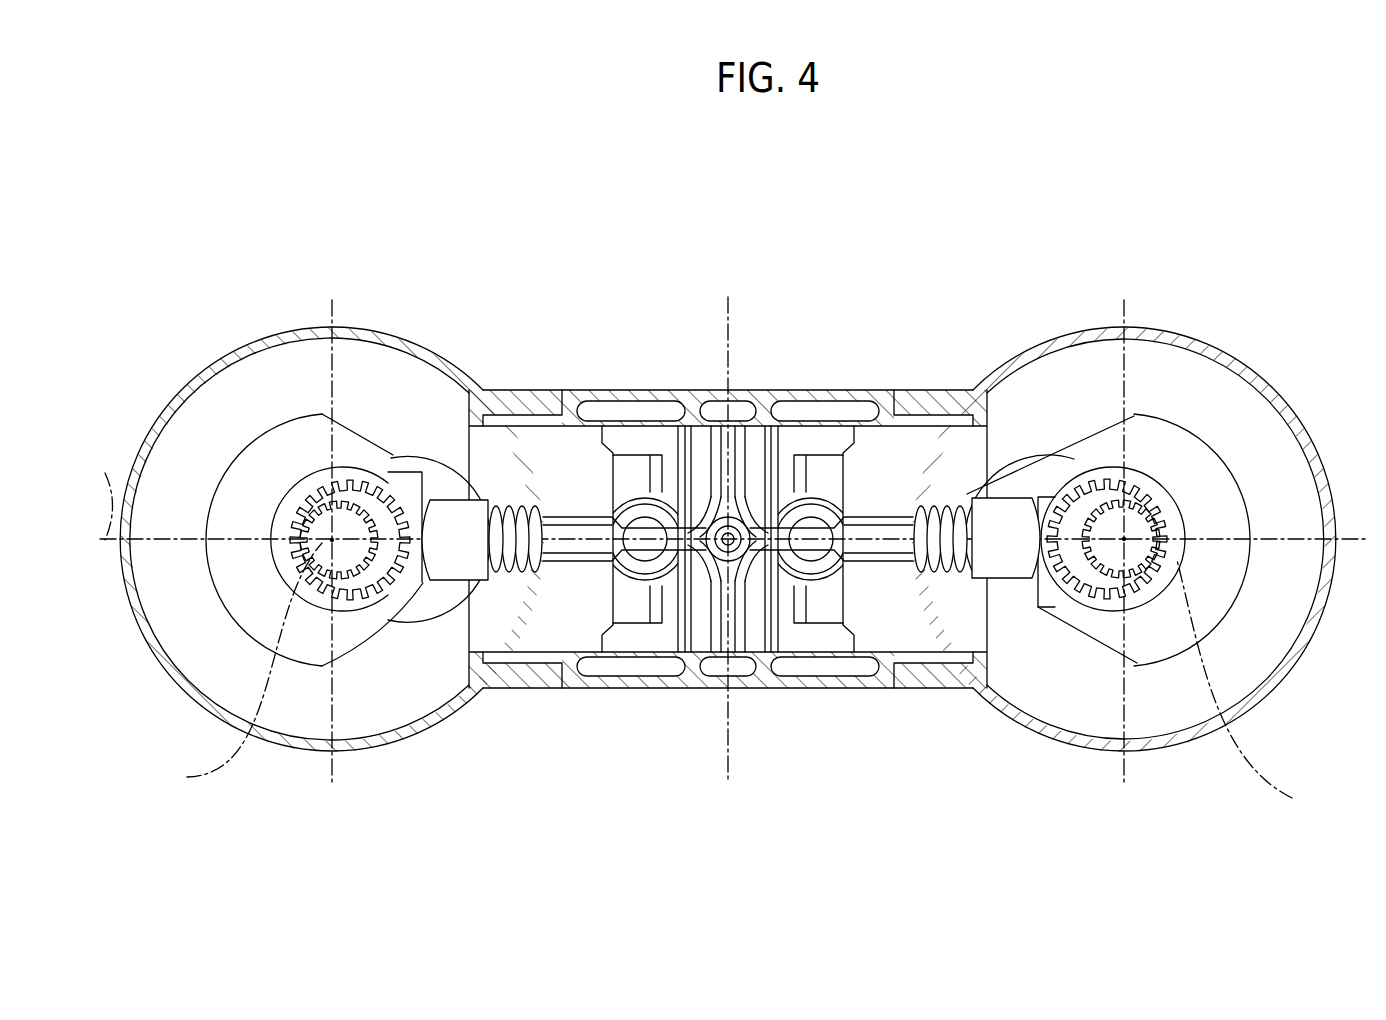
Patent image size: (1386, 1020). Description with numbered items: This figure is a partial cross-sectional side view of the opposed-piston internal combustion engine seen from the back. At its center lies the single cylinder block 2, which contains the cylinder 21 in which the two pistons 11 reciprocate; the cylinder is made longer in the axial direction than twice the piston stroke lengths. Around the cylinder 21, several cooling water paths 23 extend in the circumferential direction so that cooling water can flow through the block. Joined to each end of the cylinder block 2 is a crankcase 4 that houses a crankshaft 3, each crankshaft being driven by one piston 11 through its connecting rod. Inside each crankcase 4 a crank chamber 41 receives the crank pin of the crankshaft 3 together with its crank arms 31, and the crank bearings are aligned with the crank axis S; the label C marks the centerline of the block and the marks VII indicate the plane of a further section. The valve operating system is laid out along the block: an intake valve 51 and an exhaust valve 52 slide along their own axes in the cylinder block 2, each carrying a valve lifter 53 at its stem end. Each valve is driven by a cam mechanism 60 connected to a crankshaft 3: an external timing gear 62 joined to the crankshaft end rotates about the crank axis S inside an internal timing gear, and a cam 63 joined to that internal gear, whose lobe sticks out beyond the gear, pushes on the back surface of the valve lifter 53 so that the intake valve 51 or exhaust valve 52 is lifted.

The cylinder block 2 is at (639, 380).
The crankshaft 3 is at (310, 672).
The crankcase 4 is at (160, 405).
The piston 11 is at (665, 445).
The cylinder 21 is at (562, 447).
The cooling water path 23 is at (863, 411).
The crank arm 31 is at (250, 615).
The crank chamber 41 is at (168, 613).
The intake valve 51 is at (656, 548).
The exhaust valve 52 is at (800, 548).
The valve lifter 53 is at (447, 560).
The cam mechanism 60 is at (316, 472).
The external timing gear 62 is at (343, 556).
The cam 63 is at (397, 483).
The center line C is at (103, 494).
The crank axis S is at (742, 679).
The section line VII- VII is at (742, 768).